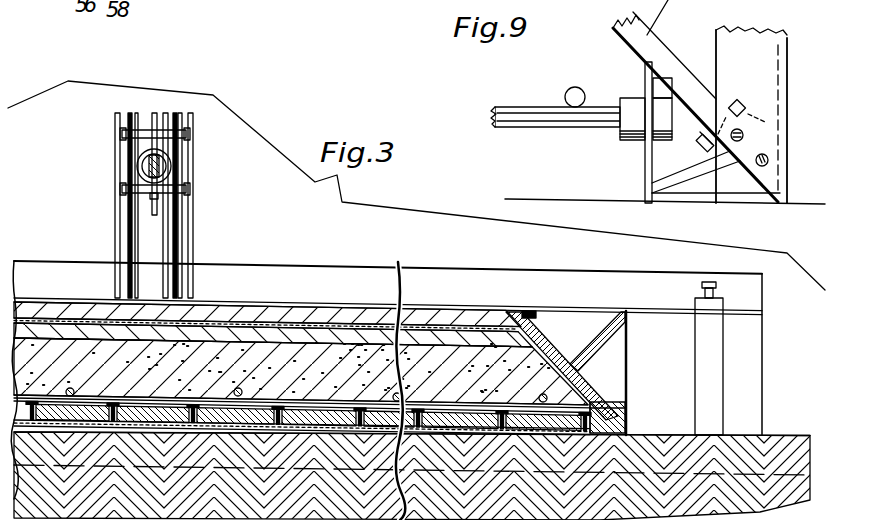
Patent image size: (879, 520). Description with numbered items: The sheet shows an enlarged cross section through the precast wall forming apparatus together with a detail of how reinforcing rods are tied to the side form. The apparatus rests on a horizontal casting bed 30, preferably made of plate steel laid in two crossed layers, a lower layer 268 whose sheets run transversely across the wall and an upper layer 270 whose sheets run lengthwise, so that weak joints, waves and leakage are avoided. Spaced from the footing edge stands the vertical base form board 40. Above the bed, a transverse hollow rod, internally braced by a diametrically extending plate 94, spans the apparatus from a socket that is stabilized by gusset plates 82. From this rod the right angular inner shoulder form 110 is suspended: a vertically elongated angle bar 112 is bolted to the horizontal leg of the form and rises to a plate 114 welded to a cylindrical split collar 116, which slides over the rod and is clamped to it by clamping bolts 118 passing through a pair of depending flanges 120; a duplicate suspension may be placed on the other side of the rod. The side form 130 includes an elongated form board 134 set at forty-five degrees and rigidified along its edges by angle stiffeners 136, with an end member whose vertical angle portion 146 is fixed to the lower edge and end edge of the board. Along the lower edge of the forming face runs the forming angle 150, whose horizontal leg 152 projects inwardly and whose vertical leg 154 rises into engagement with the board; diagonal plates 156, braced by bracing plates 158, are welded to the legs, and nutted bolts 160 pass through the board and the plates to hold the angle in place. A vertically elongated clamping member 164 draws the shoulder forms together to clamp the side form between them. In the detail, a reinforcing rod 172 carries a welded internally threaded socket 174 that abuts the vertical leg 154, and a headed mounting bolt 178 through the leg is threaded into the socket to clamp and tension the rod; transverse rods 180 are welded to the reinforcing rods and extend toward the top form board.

In FIG. 3, the casting bed 30 is at (345, 441).
In FIG. 3, the base form board 40 is at (755, 330).
In FIG. 3, the gusset plates 82 is at (152, 143).
In FIG. 3, the diametrically extending plate 94 is at (158, 170).
In FIG. 3, the inner shoulder form 110 is at (258, 278).
In FIG. 3, the angle bar 112 is at (190, 237).
In FIG. 3, the plate 114 is at (138, 133).
In FIG. 3, the split collar 116 is at (173, 162).
In FIG. 3, the clamping bolts 118 is at (183, 193).
In FIG. 3, the depending flanges 120 is at (147, 197).
In FIG. 3, the side form 130 is at (609, 290).
In FIG. 9, the side form 130 is at (600, 31).
In FIG. 3, the side form board 134 is at (580, 380).
In FIG. 3, the angle stiffeners 136 is at (529, 309).
In FIG. 9, the vertical angle portion 146 is at (745, 38).
In FIG. 3, the forming angle 150 is at (598, 448).
In FIG. 9, the forming angle 150 is at (680, 211).
In FIG. 3, the horizontal leg 152 is at (612, 440).
In FIG. 9, the horizontal leg 152 is at (712, 198).
In FIG. 3, the vertical leg 154 is at (573, 423).
In FIG. 9, the vertical leg 154 is at (644, 157).
In FIG. 9, the diagonal plates 156 is at (742, 158).
In FIG. 3, the bracing plates 158 is at (597, 341).
In FIG. 9, the bracing plates 158 is at (717, 160).
In FIG. 9, the nutted bolts 160 is at (695, 147).
In FIG. 3, the clamping member 164 is at (712, 350).
In FIG. 9, the reinforcing rods 172 is at (555, 124).
In FIG. 9, the threaded socket 174 is at (628, 97).
In FIG. 9, the mounting bolt 178 is at (663, 92).
In FIG. 3, the transverse rods 180 is at (241, 388).
In FIG. 9, the transverse rods 180 is at (568, 92).
In FIG. 3, the lower layer of sheets 268 is at (246, 431).
In FIG. 3, the upper layer of sheets 270 is at (152, 425).